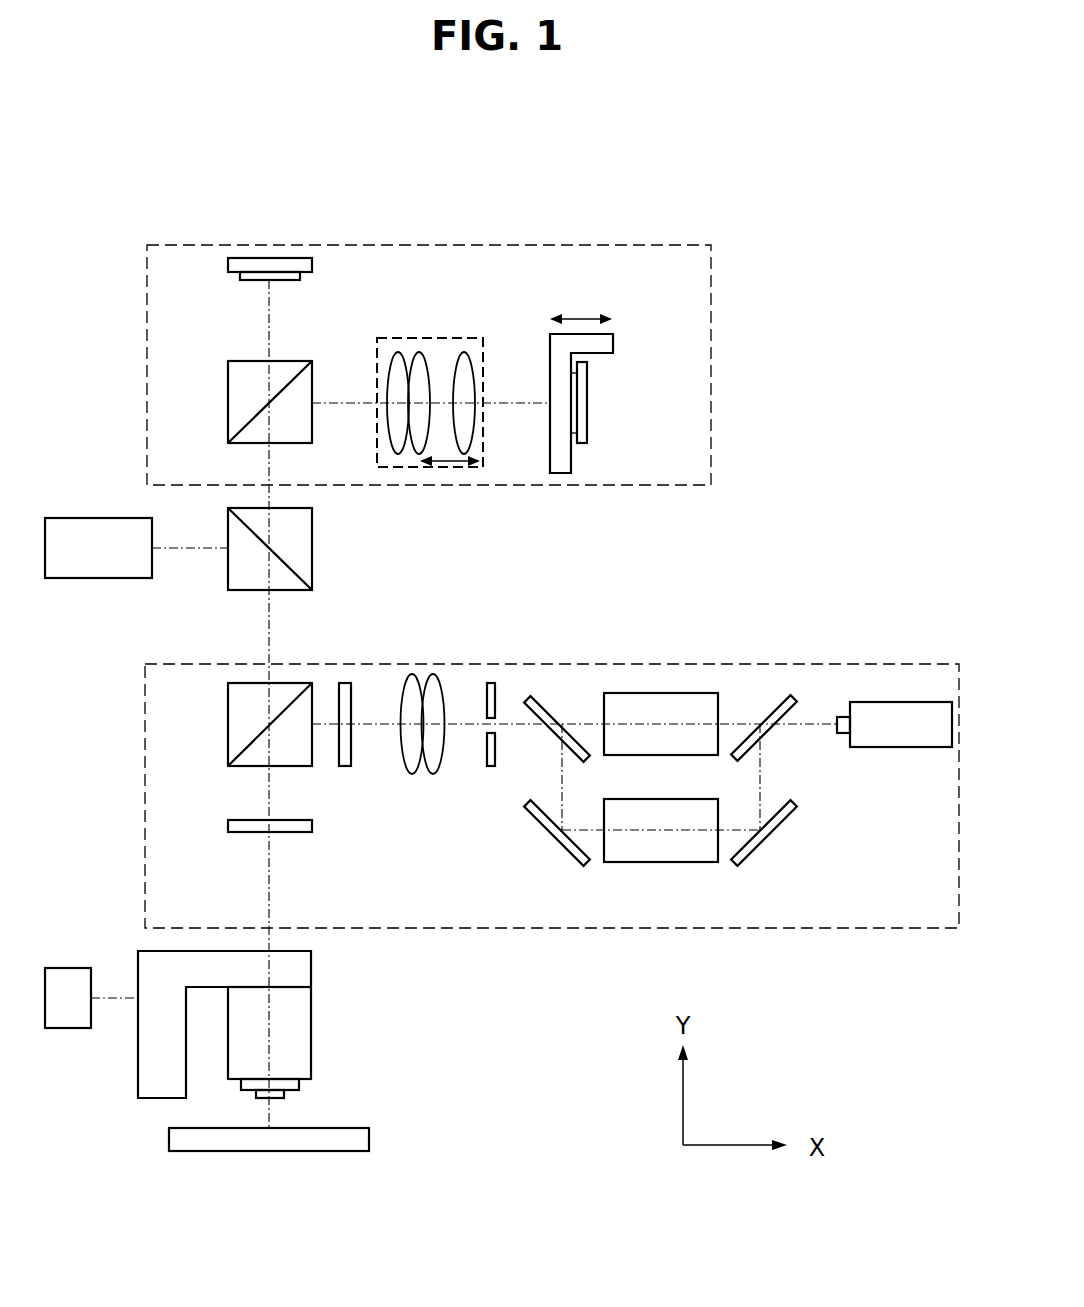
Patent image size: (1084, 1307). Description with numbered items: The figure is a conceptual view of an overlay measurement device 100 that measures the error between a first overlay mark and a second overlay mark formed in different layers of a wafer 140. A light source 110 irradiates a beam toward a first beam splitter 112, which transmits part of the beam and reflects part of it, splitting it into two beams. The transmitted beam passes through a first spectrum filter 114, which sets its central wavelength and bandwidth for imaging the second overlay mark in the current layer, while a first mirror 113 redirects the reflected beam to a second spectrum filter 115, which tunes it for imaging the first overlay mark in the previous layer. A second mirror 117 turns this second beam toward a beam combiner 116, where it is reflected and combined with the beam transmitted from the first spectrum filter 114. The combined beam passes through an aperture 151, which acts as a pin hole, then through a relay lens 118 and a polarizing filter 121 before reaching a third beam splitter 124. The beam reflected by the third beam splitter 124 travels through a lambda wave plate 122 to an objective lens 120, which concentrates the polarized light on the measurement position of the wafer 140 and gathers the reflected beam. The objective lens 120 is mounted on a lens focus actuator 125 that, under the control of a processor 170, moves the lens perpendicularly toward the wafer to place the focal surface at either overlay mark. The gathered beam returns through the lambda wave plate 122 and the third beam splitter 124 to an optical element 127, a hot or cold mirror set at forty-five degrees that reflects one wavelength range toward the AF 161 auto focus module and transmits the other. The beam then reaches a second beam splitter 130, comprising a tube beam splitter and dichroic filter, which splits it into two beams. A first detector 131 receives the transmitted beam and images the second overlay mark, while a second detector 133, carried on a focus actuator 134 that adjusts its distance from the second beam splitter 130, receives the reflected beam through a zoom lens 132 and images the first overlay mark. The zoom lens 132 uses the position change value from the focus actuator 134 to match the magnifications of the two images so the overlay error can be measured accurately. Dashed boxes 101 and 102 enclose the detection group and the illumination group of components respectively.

The overlay measurement device 100 is at (682, 220).
The image acquisition unit 101 is at (711, 285).
The laser beam unit 102 is at (845, 664).
The light source 110 is at (908, 702).
The first beam splitter 112 is at (772, 710).
The first mirror 113 is at (765, 845).
The first spectrum filter 114 is at (661, 693).
The second spectrum filter 115 is at (661, 862).
The beam combiner 116 is at (543, 700).
The second mirror 117 is at (543, 830).
The relay lens 118 is at (433, 674).
The objective lens 120 is at (311, 1032).
The polarizing filter 121 is at (345, 683).
The lambda wave plate 122 is at (228, 826).
The third beam splitter 124 is at (228, 693).
The lens focus actuator 125 is at (138, 1080).
The optical element 127 is at (312, 538).
The second beam splitter 130 is at (228, 403).
The first detector 131 is at (228, 265).
The zoom lens 132 is at (430, 338).
The second detector 133 is at (587, 403).
The focus actuator 134 is at (613, 345).
The wafer 140 is at (369, 1138).
The aperture 151 is at (491, 683).
The AF 161 is at (99, 518).
The processor 170 is at (68, 968).